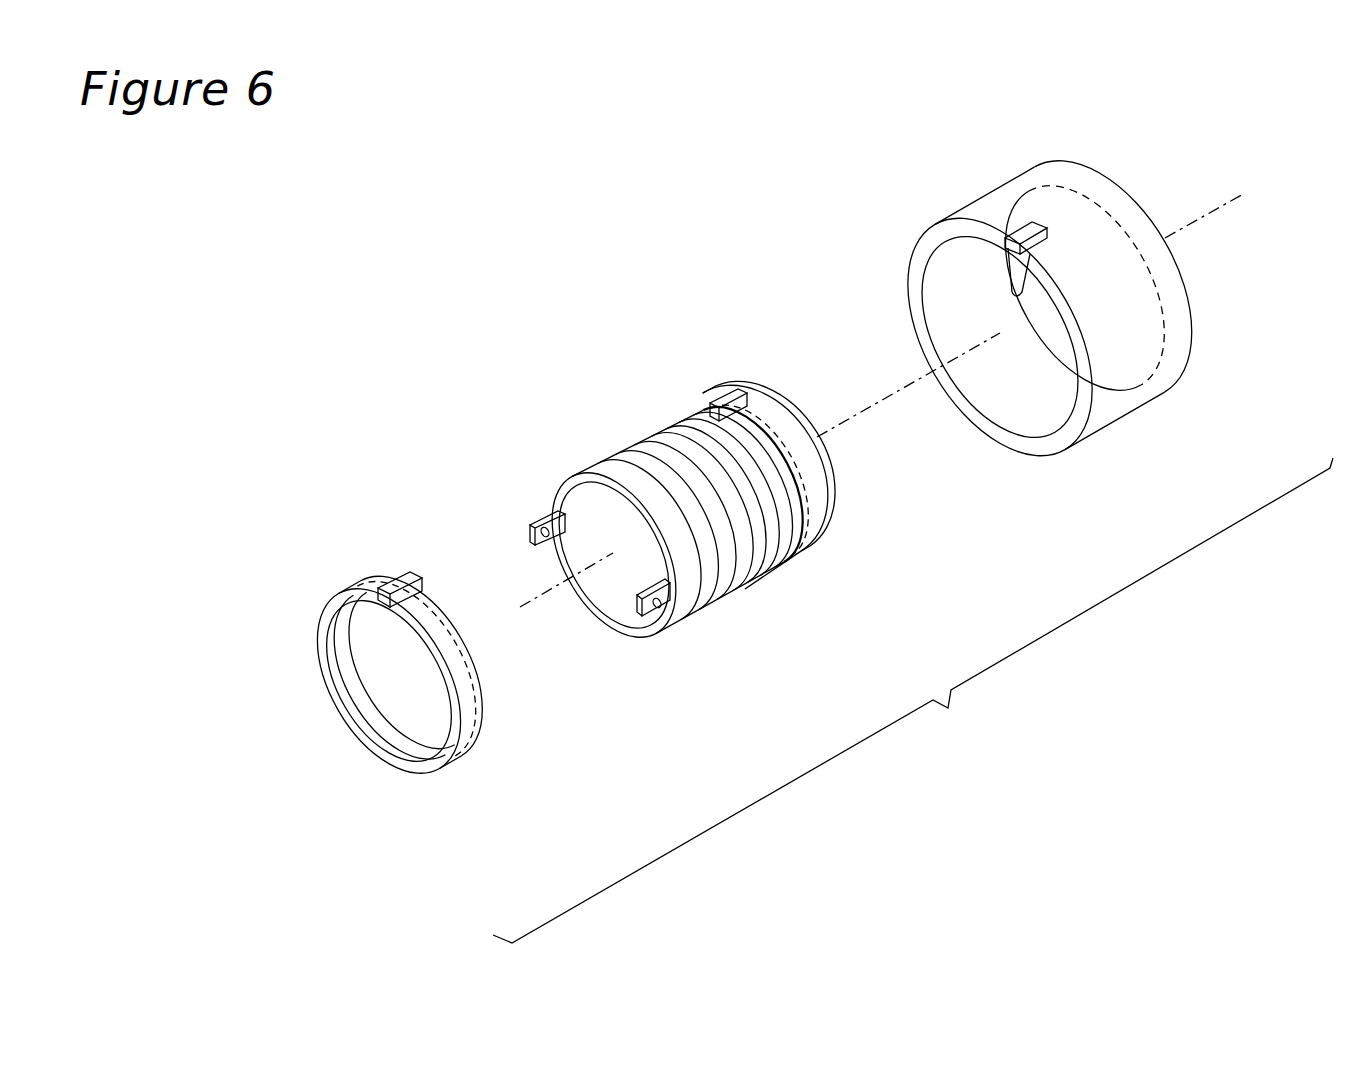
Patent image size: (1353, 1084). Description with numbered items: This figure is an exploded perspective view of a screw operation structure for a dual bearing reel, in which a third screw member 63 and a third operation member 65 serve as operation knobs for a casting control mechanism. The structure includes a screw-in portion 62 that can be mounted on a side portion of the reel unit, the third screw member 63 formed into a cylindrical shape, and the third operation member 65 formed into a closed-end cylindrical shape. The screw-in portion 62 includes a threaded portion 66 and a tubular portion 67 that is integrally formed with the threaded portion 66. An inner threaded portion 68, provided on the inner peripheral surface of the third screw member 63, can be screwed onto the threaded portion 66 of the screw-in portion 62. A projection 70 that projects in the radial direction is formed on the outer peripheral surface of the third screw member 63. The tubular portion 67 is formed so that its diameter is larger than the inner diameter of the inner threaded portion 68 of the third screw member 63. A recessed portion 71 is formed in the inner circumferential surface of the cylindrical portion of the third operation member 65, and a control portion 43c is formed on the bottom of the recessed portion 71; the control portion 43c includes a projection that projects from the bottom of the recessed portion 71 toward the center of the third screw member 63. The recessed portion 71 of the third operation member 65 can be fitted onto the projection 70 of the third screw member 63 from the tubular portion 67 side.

The screw-in portion 62 is at (759, 499).
The third screw member 63 is at (790, 563).
The third operation member 65 is at (997, 283).
The threaded portion 66 is at (637, 440).
The tubular portion 67 is at (820, 500).
The inner threaded portion 68 is at (373, 727).
The projection 70 is at (705, 405).
The recessed portion 71 is at (1015, 300).
The control portion 43c is at (1007, 237).